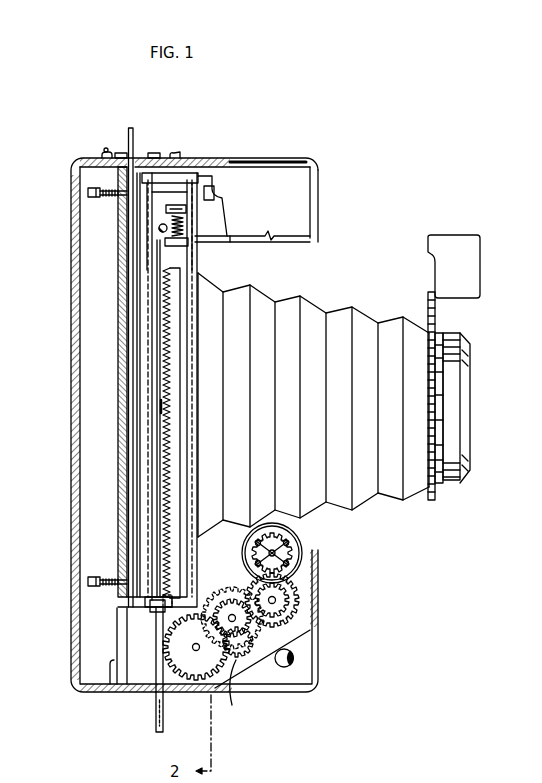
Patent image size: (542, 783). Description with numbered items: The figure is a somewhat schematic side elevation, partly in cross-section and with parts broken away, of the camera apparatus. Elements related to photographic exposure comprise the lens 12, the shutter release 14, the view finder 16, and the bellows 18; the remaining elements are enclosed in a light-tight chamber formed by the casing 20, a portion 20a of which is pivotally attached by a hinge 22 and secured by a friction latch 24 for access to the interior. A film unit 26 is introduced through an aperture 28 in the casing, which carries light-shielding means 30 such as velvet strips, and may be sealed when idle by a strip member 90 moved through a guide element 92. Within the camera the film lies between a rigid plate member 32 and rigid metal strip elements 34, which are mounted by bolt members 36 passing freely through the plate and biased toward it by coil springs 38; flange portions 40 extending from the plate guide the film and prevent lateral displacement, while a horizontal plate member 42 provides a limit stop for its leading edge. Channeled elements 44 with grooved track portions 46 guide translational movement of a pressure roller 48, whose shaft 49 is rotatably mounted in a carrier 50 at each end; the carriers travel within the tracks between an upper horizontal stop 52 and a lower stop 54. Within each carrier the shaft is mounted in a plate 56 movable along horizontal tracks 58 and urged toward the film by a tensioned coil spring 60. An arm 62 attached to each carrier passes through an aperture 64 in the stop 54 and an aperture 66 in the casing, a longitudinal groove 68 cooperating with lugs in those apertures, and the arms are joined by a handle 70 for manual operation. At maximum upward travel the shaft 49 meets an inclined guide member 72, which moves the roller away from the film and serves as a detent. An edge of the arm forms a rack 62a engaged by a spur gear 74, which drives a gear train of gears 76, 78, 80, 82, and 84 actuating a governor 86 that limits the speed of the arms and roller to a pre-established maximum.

The lens 12 is at (452, 388).
The shutter release 14 is at (294, 660).
The view finder 16 is at (470, 266).
The bellows 18 is at (340, 306).
The casing 20 is at (318, 180).
The portion of casing 20a is at (71, 357).
The hinge 22 is at (105, 153).
The friction latch 24 is at (110, 672).
The film unit 26 is at (138, 256).
The aperture 28 is at (134, 150).
The light-shielding means 30 is at (124, 152).
The plate member 32 is at (120, 234).
The strip elements 34 is at (150, 277).
The bolt members 36 is at (198, 160).
The coil springs 38 is at (92, 186).
The flange portions 40 is at (132, 548).
The horizontal plate member 42 is at (120, 603).
The channeled elements 44 is at (157, 428).
The grooved track portions 46 is at (146, 310).
The pressure roller 48 is at (200, 181).
The pressure roller shaft 49 is at (168, 232).
The carrier 50 is at (186, 208).
The horizontal stop 52 is at (210, 178).
The horizontal stop 54 is at (150, 612).
The plate 56 is at (184, 225).
The horizontal tracks 58 is at (190, 244).
The coil spring 60 is at (244, 240).
The arm 62 is at (181, 400).
The rack 62a is at (163, 437).
The aperture 64 is at (178, 596).
The aperture 66 is at (165, 700).
The groove 68 is at (170, 372).
The handle 70 is at (155, 727).
The guide member 72 is at (214, 193).
The spur gear 74 is at (232, 698).
The gear 76 is at (235, 660).
The gear 78 is at (303, 640).
The gear 80 is at (300, 590).
The gear 82 is at (290, 594).
The gear 84 is at (298, 533).
The governor 86 is at (300, 546).
The strip member 90 is at (176, 152).
The guide element 92 is at (153, 152).